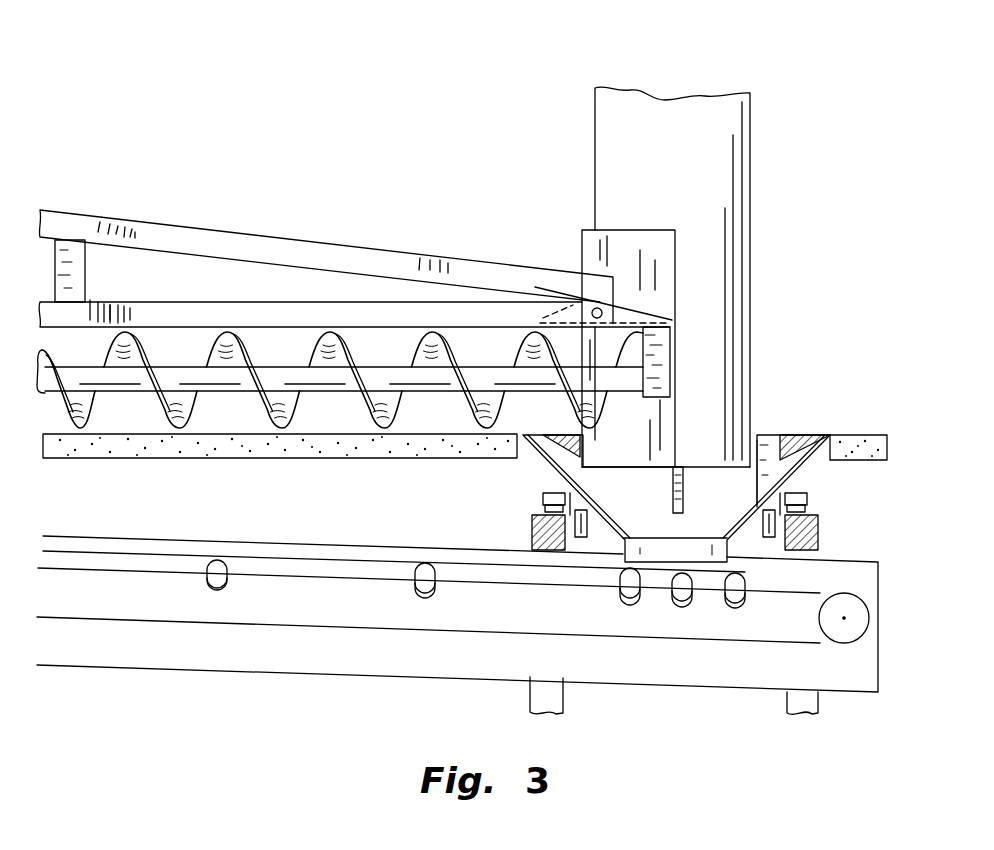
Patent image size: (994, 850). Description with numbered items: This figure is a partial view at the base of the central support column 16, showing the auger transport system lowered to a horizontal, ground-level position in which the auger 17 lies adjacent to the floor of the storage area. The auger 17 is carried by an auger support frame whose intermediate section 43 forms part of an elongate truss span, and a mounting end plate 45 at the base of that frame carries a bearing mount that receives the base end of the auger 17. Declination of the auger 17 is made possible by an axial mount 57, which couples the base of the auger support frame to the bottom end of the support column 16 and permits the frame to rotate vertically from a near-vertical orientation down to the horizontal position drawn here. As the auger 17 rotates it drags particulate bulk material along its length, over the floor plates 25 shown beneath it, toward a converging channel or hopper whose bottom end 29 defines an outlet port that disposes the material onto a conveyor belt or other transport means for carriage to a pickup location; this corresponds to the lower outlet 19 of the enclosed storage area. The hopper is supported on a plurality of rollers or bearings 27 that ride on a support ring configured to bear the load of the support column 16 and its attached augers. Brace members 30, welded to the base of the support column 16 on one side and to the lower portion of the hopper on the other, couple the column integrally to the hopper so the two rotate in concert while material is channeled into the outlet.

The central support column 16 is at (722, 132).
The auger transport device 17 is at (297, 432).
The lower outlet 19 is at (720, 498).
The bottom plate 25 is at (118, 447).
The rollers or bearings 27 is at (543, 497).
The bottom end of hopper 29 is at (727, 560).
The brace member 30 is at (780, 458).
The intermediate section of auger support frame 43 is at (227, 240).
The mounting end plate 45 is at (668, 383).
The axial mount 57 is at (593, 306).